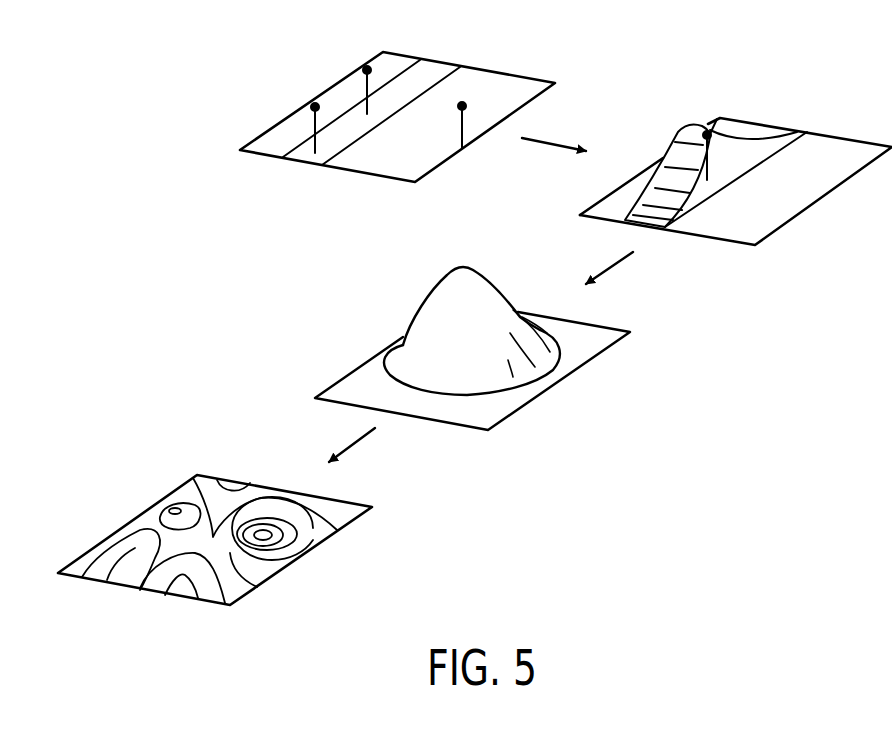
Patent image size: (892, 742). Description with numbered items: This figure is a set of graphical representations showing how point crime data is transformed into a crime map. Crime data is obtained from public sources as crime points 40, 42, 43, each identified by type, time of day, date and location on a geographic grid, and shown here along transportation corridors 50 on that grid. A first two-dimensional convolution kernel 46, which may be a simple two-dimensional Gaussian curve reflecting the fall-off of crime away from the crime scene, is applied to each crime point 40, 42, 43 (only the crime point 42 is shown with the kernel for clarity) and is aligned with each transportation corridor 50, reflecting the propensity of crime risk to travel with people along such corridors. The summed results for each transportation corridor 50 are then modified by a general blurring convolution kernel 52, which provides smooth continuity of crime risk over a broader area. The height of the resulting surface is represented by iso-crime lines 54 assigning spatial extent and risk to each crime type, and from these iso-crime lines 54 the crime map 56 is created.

The crime point 40 is at (315, 107).
The crime point 42 is at (367, 70).
The crime point 43 is at (462, 106).
The first two-dimensional convolution kernel 46 is at (735, 147).
The transportation corridor 50 is at (345, 132).
The general blurring convolution kernel 52 is at (482, 307).
The iso-crime lines 54 is at (267, 545).
The crime map 56 is at (148, 512).